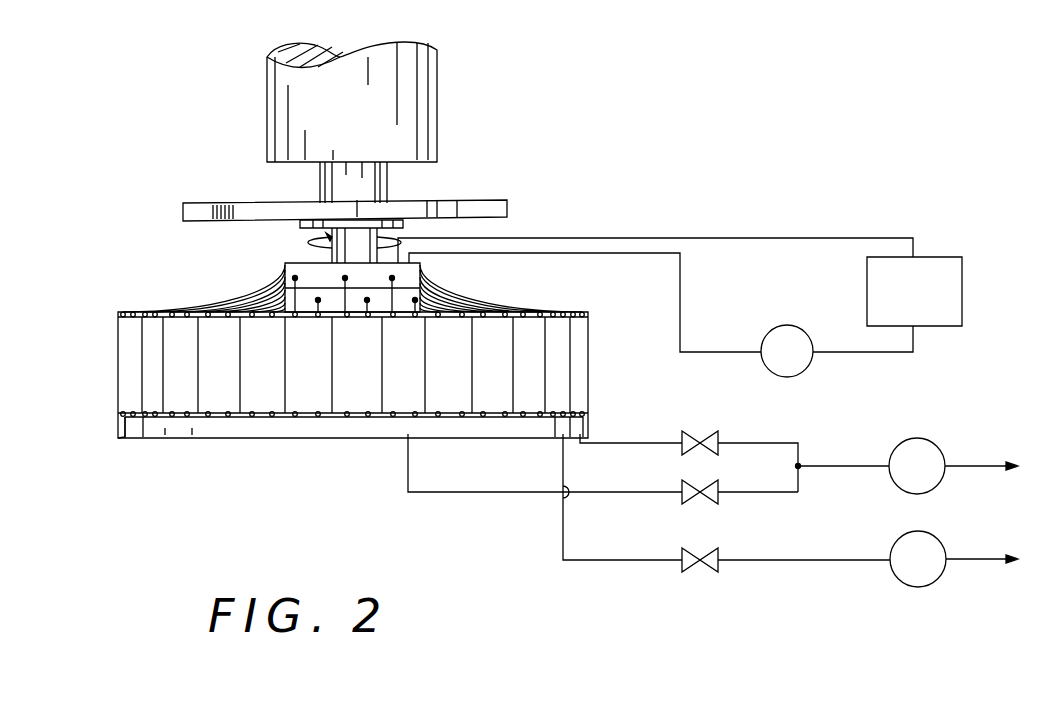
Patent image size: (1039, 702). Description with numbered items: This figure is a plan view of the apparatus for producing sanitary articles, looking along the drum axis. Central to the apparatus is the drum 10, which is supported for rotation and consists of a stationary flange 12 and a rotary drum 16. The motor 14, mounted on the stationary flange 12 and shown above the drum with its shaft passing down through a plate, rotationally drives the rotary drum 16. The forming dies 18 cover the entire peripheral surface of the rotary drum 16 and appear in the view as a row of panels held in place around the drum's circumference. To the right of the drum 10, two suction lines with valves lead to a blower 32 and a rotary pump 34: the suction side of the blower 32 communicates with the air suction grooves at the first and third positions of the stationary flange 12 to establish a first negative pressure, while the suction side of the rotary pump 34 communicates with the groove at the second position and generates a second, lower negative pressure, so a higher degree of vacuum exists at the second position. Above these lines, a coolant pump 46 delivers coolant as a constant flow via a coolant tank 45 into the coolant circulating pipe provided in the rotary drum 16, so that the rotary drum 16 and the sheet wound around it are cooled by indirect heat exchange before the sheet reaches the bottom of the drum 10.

The drum 10 is at (140, 438).
The stationary flange 12 is at (243, 427).
The motor 14 is at (408, 100).
The rotary drum 16 is at (118, 362).
The forming dies 18 is at (153, 393).
The blower 32 is at (933, 440).
The rotary pump 34 is at (945, 543).
The coolant tank 45 is at (962, 310).
The coolant pump 46 is at (764, 333).